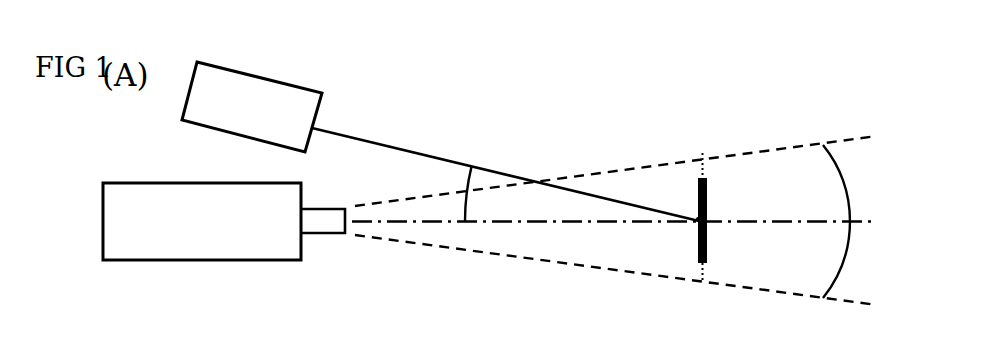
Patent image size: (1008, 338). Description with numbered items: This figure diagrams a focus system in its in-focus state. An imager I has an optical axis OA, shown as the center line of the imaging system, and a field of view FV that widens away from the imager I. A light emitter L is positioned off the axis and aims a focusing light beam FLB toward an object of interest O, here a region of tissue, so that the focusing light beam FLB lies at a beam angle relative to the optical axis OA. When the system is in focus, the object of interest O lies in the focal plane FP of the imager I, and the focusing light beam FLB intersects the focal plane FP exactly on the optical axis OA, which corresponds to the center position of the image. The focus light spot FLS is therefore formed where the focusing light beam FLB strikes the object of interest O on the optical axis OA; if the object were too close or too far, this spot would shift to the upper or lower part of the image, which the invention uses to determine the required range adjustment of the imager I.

The imager I is at (224, 221).
The light emitter L is at (252, 107).
The focusing light beam FLB is at (405, 113).
The optical axis OA is at (601, 234).
The field of view FV is at (624, 220).
The focal plane FP is at (703, 134).
The object of interest O is at (729, 243).
The focus light spot FLS is at (681, 200).